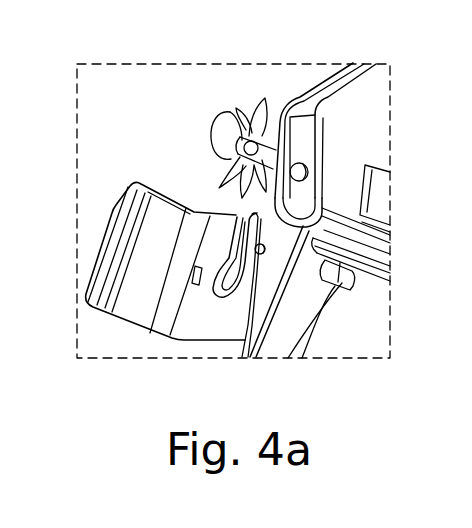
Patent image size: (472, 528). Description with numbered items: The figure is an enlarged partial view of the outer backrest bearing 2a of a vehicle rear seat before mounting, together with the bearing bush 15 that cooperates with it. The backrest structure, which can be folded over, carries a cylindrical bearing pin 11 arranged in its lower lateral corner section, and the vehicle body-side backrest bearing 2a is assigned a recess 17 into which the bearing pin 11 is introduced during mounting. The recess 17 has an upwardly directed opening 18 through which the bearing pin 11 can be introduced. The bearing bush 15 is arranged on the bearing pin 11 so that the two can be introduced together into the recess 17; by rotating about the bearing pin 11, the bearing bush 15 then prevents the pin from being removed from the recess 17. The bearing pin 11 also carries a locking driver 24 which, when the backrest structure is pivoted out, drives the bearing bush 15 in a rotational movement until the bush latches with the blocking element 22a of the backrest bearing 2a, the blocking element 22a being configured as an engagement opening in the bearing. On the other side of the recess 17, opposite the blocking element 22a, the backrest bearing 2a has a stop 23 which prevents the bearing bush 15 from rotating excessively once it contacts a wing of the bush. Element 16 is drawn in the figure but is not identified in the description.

The outer backrest bearing 2a is at (120, 126).
The locking driver 24 is at (226, 113).
The bearing bush 15 is at (273, 110).
The bearing pin 11 is at (310, 157).
The clamping plate 16 is at (148, 237).
The blocking element 22a is at (192, 272).
The recess 17 is at (220, 292).
The opening 18 is at (243, 360).
The stop 23 is at (266, 254).